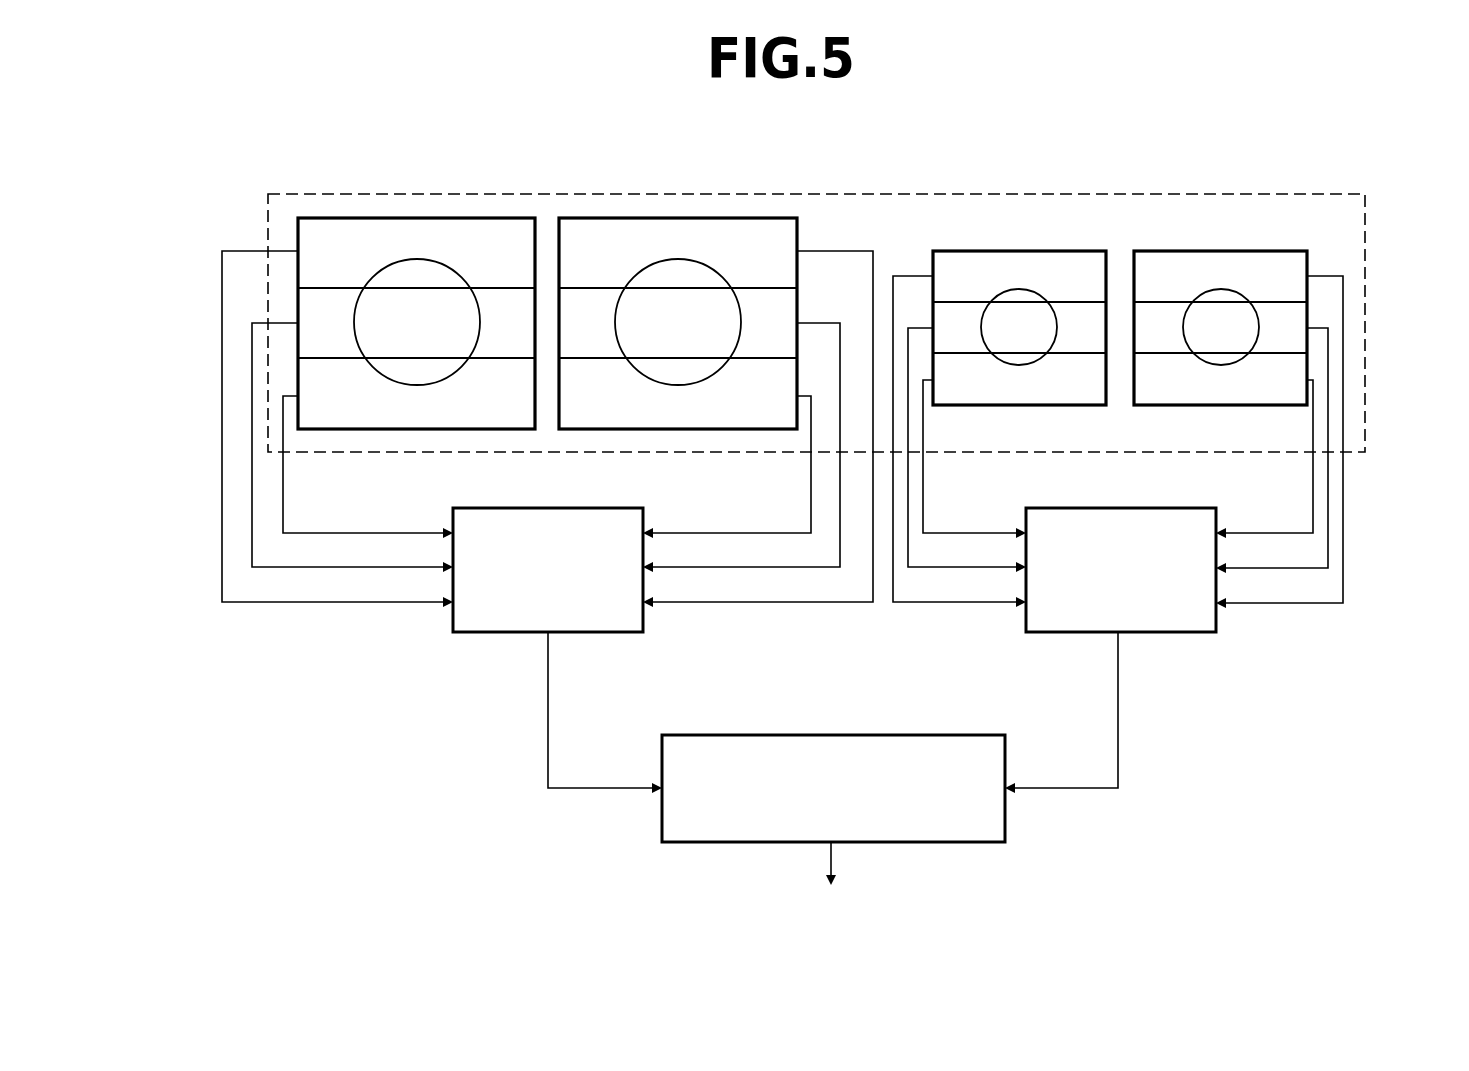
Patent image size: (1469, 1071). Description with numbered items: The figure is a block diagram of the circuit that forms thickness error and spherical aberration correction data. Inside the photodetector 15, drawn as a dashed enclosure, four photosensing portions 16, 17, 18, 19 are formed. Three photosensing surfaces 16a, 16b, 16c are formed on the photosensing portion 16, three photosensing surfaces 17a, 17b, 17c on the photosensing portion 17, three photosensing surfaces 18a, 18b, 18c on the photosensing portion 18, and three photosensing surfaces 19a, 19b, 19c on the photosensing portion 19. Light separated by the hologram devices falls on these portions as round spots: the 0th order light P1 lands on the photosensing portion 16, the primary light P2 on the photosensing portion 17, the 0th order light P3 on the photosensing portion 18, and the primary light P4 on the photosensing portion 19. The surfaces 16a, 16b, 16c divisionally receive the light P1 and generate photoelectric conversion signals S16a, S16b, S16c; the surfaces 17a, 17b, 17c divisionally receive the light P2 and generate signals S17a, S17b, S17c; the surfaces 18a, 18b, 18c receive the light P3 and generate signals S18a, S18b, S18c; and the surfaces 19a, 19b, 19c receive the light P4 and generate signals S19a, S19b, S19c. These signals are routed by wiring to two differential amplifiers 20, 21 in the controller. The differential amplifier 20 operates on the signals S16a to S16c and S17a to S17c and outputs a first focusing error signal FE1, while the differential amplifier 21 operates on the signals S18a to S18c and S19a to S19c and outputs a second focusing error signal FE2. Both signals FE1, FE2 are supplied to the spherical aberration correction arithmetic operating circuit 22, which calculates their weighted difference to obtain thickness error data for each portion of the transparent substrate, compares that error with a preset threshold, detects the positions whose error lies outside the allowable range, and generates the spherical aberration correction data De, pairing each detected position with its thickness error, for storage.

The photodetector 15 is at (845, 194).
The photosensing portion 16 is at (397, 217).
The photosensing surface 16a is at (418, 418).
The photosensing surface 16b is at (327, 347).
The photosensing surface 16c is at (327, 232).
The photosensing portion 17 is at (675, 217).
The photosensing surface 17a is at (687, 418).
The photosensing surface 17b is at (767, 347).
The photosensing surface 17c is at (610, 235).
The photosensing portion 18 is at (1002, 248).
The photosensing surface 18a is at (1063, 393).
The photosensing surface 18b is at (960, 343).
The photosensing surface 18c is at (960, 260).
The photosensing portion 19 is at (1218, 252).
The photosensing surface 19a is at (1258, 393).
The photosensing surface 19b is at (1165, 343).
The photosensing surface 19c is at (1163, 265).
The differential amplifier 20 is at (590, 508).
The differential amplifier 21 is at (1157, 508).
The spherical aberration correction arithmetic operating circuit 22 is at (1010, 745).
The 0th order light P1 is at (440, 260).
The primary light P2 is at (710, 260).
The 0th order light P3 is at (1033, 290).
The primary light P4 is at (1237, 293).
The photoelectric conversion signal S16a is at (283, 497).
The photoelectric conversion signal S16b is at (252, 372).
The photoelectric conversion signal S16c is at (222, 282).
The photoelectric conversion signal S17a is at (688, 535).
The photoelectric conversion signal S17b is at (770, 568).
The photoelectric conversion signal S17c is at (837, 603).
The photoelectric conversion signal S18a is at (970, 532).
The photoelectric conversion signal S18b is at (930, 568).
The photoelectric conversion signal S18c is at (997, 603).
The photoelectric conversion signal S19a is at (1313, 530).
The photoelectric conversion signal S19b is at (1328, 520).
The photoelectric conversion signal S19c is at (1343, 500).
The first focusing error signal FE1 is at (548, 703).
The second focusing error signal FE2 is at (1118, 703).
The spherical aberration correction data De is at (830, 881).